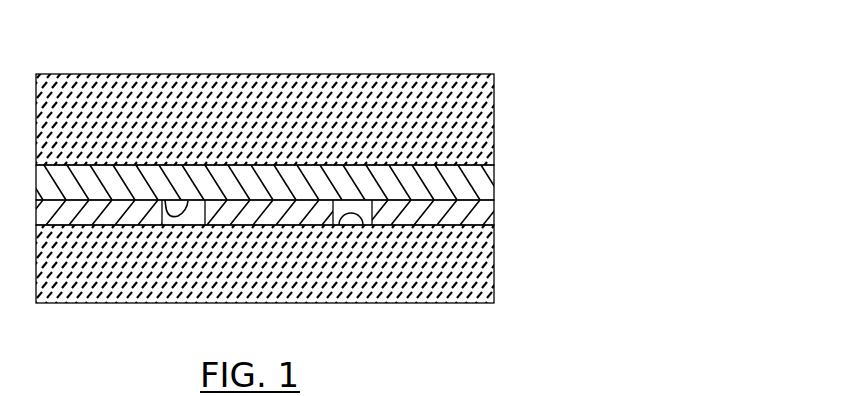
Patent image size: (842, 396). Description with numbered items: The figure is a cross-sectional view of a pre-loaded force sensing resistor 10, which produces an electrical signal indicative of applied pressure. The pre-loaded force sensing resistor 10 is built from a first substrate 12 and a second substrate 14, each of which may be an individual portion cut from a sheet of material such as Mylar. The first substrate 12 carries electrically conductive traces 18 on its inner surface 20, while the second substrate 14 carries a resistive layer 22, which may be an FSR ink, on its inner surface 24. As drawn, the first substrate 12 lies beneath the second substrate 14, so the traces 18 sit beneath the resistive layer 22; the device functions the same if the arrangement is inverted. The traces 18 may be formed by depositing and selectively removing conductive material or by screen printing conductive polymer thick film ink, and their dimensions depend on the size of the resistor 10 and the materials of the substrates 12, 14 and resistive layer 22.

The pre-loaded force sensing resistor 10 is at (665, 58).
The first substrate 12 is at (488, 292).
The second substrate 14 is at (486, 122).
The electrically conductive traces 18 is at (488, 216).
The inner surface of the first substrate 20 is at (360, 224).
The resistive layer 22 is at (486, 190).
The inner surface of the second substrate 24 is at (165, 200).